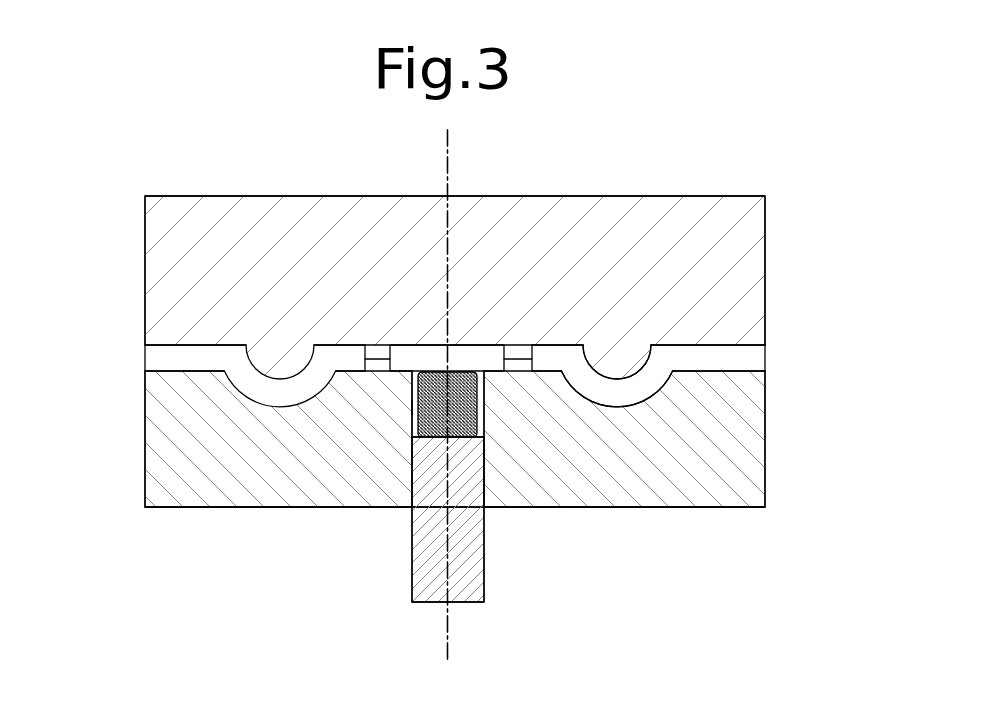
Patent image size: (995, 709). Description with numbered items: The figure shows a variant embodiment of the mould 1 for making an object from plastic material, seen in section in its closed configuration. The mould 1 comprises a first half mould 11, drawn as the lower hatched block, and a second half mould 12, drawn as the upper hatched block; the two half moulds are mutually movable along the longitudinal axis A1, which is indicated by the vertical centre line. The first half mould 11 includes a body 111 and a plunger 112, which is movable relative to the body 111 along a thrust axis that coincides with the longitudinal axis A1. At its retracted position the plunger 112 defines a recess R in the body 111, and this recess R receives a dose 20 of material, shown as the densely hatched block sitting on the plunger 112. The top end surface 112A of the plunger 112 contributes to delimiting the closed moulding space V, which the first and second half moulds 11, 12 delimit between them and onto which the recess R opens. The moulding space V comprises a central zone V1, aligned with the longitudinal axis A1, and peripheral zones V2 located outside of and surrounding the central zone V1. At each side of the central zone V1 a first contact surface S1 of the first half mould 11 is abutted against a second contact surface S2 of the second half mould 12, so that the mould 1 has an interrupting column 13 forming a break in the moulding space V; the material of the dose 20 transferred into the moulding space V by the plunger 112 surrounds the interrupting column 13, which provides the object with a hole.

The mould 1 is at (748, 168).
The first half mould 11 is at (767, 480).
The body 111 is at (195, 472).
The plunger 112 is at (472, 572).
The top end surface 112A is at (478, 430).
The second half mould 12 is at (767, 258).
The interrupting column 13 is at (367, 360).
The dose 20 is at (432, 408).
The recess R is at (412, 407).
The first contact surface S1 is at (373, 365).
The second contact surface S2 is at (383, 357).
The moulding space V is at (614, 399).
The central zone V1 is at (482, 360).
The peripheral zone V2 is at (653, 378).
The longitudinal axis A1 is at (447, 632).